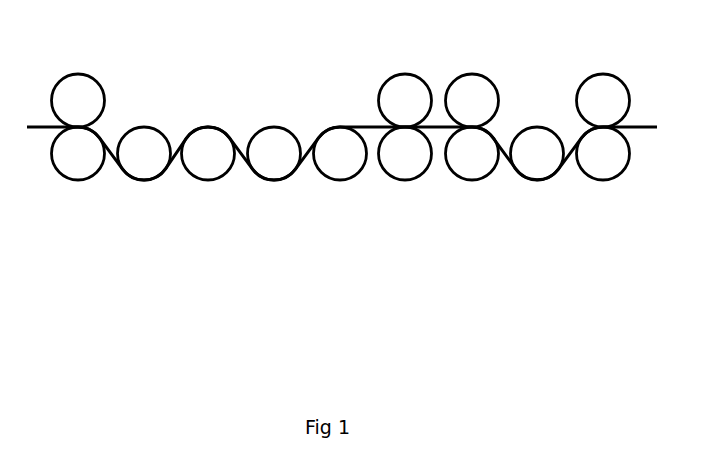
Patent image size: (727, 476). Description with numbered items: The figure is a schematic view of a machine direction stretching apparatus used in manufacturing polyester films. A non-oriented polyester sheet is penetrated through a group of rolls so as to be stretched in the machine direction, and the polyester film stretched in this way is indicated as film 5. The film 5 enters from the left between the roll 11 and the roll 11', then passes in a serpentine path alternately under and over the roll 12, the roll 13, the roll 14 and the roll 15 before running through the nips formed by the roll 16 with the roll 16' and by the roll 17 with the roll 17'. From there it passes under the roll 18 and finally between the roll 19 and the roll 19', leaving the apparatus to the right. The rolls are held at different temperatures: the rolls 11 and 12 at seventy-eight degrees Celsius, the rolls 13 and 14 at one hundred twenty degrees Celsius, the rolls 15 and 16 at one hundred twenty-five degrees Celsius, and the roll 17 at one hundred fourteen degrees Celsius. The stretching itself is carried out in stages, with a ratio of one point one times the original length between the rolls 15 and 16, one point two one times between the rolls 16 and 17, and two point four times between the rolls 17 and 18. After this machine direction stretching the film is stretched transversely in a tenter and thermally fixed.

The polyester film 5 is at (643, 123).
The roll 11 is at (78, 191).
The roll 11' is at (83, 69).
The roll 12 is at (141, 181).
The roll 13 is at (205, 181).
The roll 14 is at (271, 181).
The roll 15 is at (337, 181).
The roll 16 is at (405, 191).
The roll 16' is at (411, 69).
The roll 17 is at (472, 191).
The roll 17' is at (477, 69).
The roll 18 is at (534, 181).
The roll 19 is at (603, 191).
The roll 19' is at (609, 69).